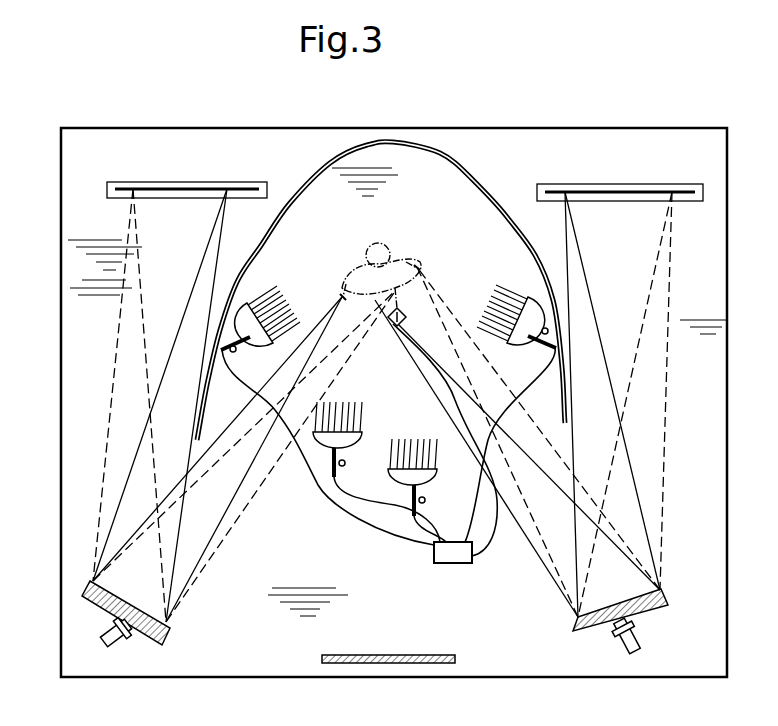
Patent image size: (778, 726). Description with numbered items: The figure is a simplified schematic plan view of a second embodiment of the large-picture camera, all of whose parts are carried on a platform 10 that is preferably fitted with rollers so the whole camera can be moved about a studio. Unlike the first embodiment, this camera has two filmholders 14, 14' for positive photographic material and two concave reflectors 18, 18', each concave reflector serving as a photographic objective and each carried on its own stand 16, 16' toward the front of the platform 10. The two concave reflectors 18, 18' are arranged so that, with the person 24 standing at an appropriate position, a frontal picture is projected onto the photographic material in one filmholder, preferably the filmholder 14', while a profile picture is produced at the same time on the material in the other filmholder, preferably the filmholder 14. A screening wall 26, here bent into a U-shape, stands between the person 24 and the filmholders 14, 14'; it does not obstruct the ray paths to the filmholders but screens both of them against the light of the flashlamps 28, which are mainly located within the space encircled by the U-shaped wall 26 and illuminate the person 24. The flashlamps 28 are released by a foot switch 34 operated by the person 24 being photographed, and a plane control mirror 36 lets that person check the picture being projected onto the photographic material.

The platform 10 is at (61, 341).
The filmholder 14 is at (190, 385).
The filmholder 14' is at (620, 381).
The stand 16 is at (99, 632).
The stand 16' is at (646, 637).
The concave reflector 18 is at (239, 479).
The concave reflector 18' is at (521, 469).
The person 24 is at (398, 246).
The screening wall 26 is at (364, 141).
The flashlamps 28 is at (248, 303).
The foot switch 34 is at (393, 327).
The plane control mirror 36 is at (426, 656).